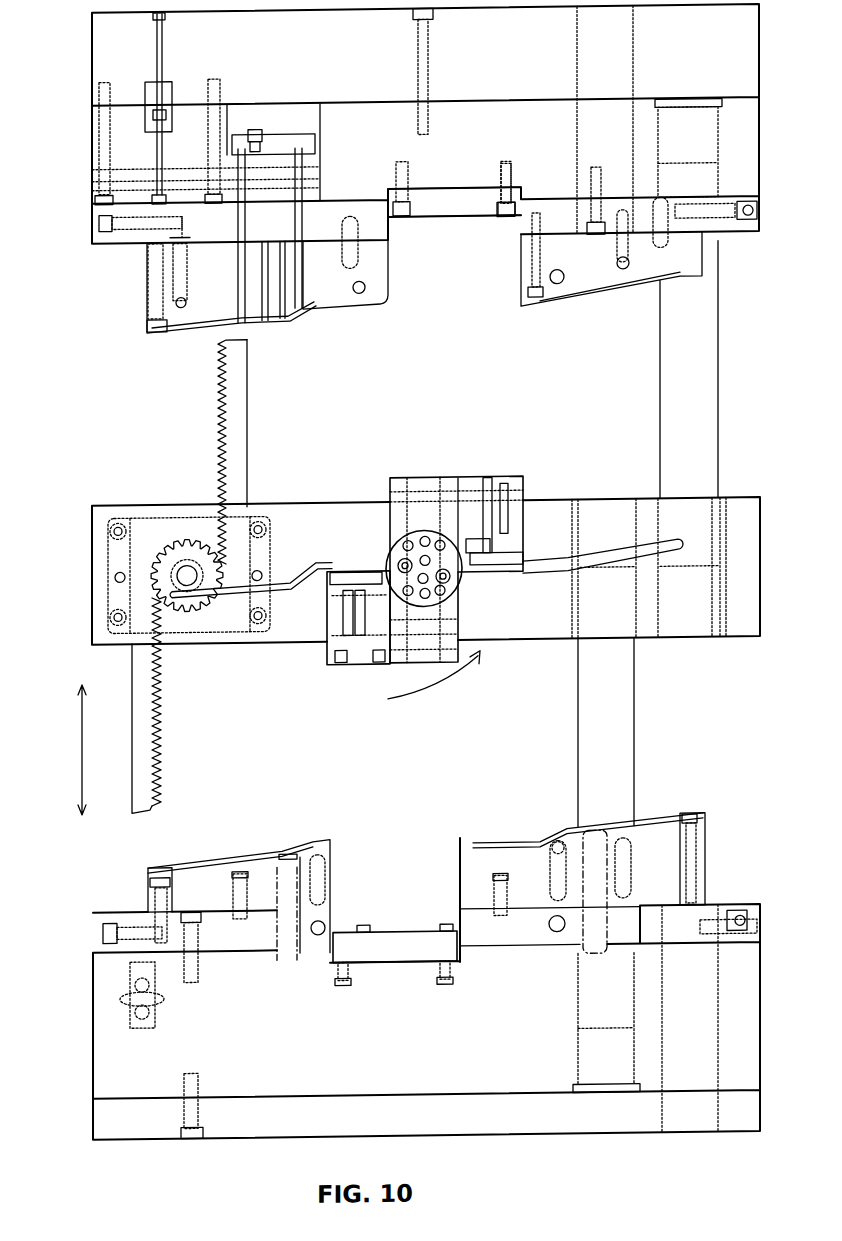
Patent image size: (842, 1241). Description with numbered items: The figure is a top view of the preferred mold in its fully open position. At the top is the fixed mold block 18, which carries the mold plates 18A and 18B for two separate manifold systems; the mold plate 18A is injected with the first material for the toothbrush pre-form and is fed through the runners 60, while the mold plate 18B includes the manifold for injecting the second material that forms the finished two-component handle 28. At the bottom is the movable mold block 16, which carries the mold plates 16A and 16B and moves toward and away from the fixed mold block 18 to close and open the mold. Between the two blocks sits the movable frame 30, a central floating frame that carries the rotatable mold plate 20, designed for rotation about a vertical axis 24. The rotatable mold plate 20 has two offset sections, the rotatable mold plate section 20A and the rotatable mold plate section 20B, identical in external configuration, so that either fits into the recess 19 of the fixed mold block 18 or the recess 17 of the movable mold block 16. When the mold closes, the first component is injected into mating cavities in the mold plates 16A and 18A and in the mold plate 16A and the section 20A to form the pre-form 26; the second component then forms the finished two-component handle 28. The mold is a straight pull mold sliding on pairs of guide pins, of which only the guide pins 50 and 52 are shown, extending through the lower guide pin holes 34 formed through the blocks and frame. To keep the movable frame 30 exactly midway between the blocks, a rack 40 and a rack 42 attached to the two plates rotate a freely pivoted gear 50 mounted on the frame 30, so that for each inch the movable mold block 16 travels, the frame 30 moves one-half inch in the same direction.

The movable mold block 16 is at (426, 954).
The mold plate 16A is at (207, 861).
The mold plate 16B is at (560, 832).
The recess 17 is at (397, 932).
The fixed mold block 18 is at (395, 188).
The mold plate 18A is at (323, 297).
The mold plate 18B is at (590, 300).
The recess 19 is at (452, 222).
The rotatable mold plate 20 is at (455, 542).
The rotatable mold plate section 20A is at (332, 652).
The rotatable mold plate section 20B is at (523, 514).
The vertical axis 24 is at (428, 561).
The pre-form 26 is at (597, 558).
The finished two-component handle 28 is at (262, 648).
The movable frame 30 is at (515, 642).
The lower guide pin holes 34 is at (722, 636).
The rack 40 is at (158, 747).
The rack 42 is at (247, 436).
The guide pin / gear 50 is at (182, 543).
The guide pin 52 is at (718, 412).
The runners 60 is at (292, 305).